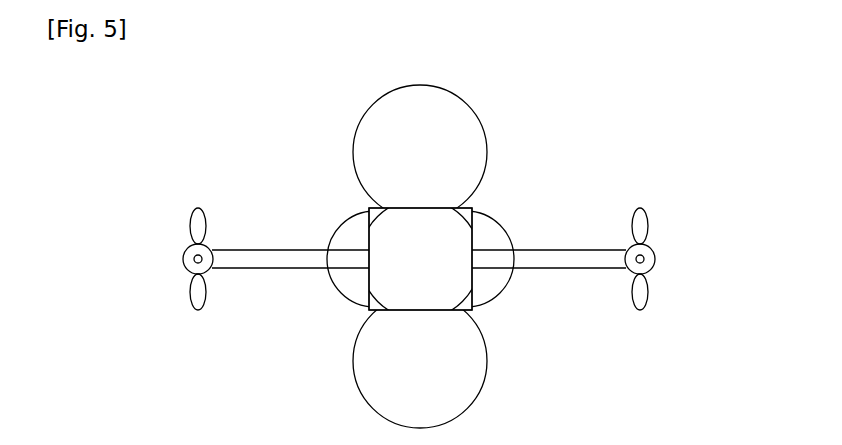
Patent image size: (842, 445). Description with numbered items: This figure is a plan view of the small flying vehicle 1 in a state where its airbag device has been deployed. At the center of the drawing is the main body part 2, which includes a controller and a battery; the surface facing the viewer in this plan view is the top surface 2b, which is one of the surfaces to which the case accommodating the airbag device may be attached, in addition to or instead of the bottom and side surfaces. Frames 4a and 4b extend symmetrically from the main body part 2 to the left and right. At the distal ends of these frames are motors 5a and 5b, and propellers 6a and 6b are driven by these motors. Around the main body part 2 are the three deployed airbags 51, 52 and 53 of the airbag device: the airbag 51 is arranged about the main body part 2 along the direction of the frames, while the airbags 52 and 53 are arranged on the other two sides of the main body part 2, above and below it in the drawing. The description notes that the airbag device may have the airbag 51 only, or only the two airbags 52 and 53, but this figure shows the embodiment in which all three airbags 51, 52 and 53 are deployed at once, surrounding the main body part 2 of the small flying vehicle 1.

The small flying vehicle 1 is at (472, 237).
The main body part 2 is at (473, 283).
The top surface 2b is at (420, 259).
The frame 4a is at (277, 250).
The frame 4b is at (568, 250).
The motor 5a is at (183, 267).
The motor 5b is at (657, 257).
The propeller 6a is at (195, 229).
The propeller 6b is at (643, 225).
The airbag 51 is at (345, 283).
The airbag 52 is at (483, 390).
The airbag 53 is at (468, 107).